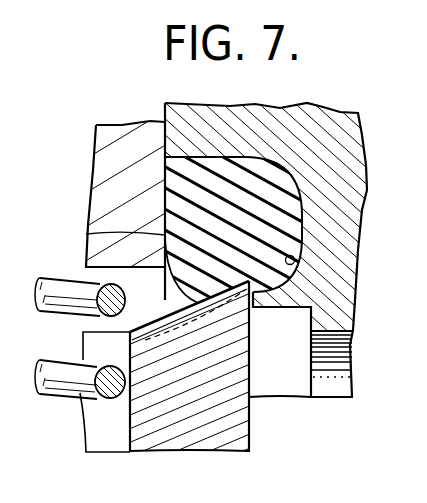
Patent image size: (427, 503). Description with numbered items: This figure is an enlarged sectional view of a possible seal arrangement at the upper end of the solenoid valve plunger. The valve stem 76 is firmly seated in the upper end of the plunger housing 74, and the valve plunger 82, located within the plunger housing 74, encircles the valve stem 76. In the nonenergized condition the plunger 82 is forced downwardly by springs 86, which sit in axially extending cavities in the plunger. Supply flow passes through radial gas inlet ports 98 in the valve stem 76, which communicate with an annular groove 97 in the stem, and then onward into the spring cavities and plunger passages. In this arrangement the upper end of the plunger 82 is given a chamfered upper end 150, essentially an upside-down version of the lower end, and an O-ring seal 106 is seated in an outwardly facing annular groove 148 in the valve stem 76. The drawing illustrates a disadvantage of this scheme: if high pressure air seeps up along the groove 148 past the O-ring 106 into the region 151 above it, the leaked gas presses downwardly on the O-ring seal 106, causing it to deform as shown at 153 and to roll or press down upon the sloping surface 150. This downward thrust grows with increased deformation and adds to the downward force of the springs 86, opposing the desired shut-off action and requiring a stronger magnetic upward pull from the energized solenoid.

The plunger housing 74 is at (106, 161).
The valve stem 76 is at (340, 152).
The valve plunger 82 is at (250, 437).
The springs 86 is at (66, 392).
The annular groove 97 is at (282, 390).
The radial gas inlet ports 98 is at (333, 387).
The O-ring seal 106 is at (287, 222).
The outwardly facing annular groove 148 is at (296, 256).
The chamfered upper end 150 is at (130, 343).
The region above the O-ring 151 is at (255, 158).
The deformed O-ring shape 153 is at (86, 234).